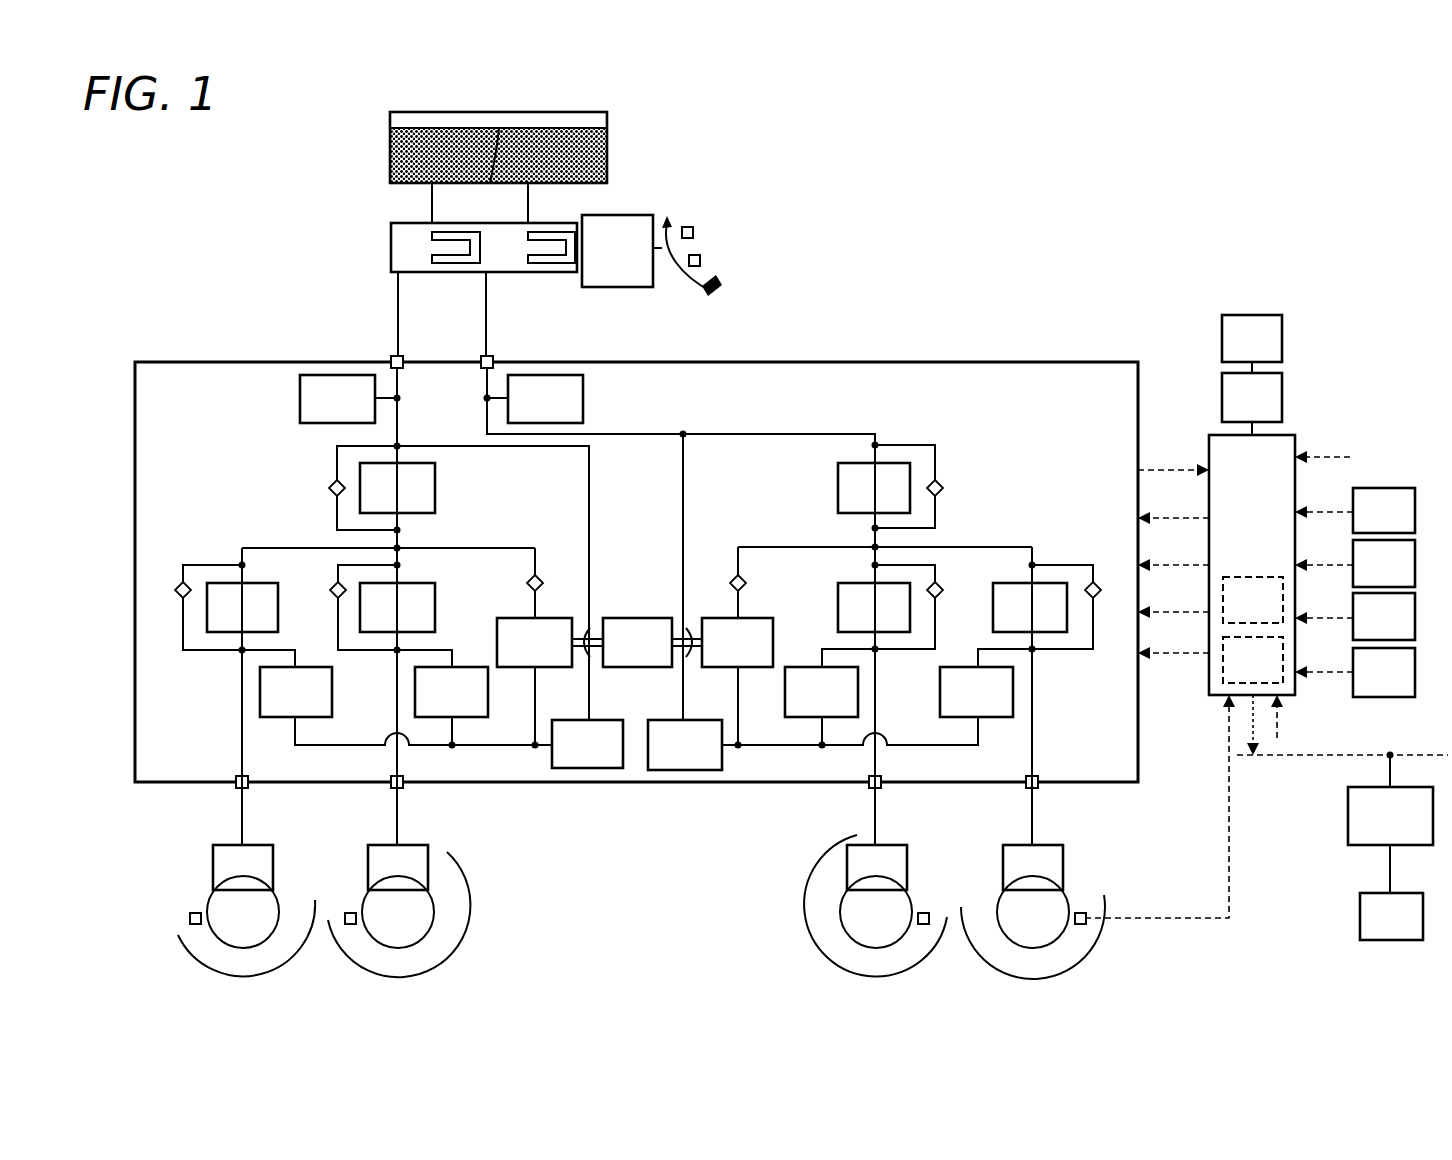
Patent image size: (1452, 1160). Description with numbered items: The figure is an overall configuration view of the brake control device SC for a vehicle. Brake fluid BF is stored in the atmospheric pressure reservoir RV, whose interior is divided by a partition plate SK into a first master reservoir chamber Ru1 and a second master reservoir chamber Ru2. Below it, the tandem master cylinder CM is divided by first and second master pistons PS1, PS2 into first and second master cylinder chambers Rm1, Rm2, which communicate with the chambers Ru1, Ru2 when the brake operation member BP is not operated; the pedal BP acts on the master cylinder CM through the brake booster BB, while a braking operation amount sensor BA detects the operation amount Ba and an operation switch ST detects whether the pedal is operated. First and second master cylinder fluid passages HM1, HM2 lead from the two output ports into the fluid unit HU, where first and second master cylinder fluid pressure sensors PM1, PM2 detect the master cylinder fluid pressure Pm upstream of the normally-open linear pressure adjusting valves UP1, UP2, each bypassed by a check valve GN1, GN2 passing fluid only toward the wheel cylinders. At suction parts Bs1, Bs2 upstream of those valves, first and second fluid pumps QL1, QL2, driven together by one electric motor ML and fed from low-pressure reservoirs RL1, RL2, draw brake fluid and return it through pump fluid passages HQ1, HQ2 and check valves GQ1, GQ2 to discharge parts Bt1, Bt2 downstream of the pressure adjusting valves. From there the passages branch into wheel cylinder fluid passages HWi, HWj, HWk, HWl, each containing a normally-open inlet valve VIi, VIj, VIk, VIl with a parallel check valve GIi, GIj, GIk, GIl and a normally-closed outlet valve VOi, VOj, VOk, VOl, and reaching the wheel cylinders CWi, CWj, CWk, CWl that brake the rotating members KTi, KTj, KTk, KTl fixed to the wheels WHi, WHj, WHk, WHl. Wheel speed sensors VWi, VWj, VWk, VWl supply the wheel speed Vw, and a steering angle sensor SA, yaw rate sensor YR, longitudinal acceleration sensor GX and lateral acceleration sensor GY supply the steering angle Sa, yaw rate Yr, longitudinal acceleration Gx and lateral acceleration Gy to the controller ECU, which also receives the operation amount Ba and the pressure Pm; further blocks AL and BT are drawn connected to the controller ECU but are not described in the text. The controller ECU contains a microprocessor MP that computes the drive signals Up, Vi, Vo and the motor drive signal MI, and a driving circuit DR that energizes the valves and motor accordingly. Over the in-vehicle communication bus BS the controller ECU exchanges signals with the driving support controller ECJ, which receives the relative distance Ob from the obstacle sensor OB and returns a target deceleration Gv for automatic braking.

The reservoir RV is at (452, 113).
The partition plate SK is at (498, 138).
The first master reservoir chamber Ru1 is at (555, 155).
The second master reservoir chamber Ru2 is at (442, 155).
The brake fluid BF is at (602, 150).
The master cylinder CM is at (400, 223).
The first master cylinder chamber Rm1 is at (506, 266).
The second master cylinder chamber Rm2 is at (400, 263).
The first master piston PS1 is at (571, 264).
The second master piston PS2 is at (468, 264).
The brake booster BB is at (617, 251).
The braking operation amount sensor BA is at (691, 228).
The operation switch ST is at (699, 256).
The brake operation member BP is at (718, 292).
The brake control device SC is at (893, 330).
The fluid unit HU is at (264, 362).
The first master cylinder fluid pressure sensor PM1 is at (534, 399).
The second master cylinder fluid pressure sensor PM2 is at (350, 399).
The first master cylinder fluid passage HM1 is at (775, 434).
The second master cylinder fluid passage HM2 is at (395, 437).
The first suction part Bs1 is at (683, 434).
The second suction part Bs2 is at (403, 449).
The first pressure adjusting valve UP1 is at (874, 488).
The second pressure adjusting valve UP2 is at (397, 488).
The check valve GN1 is at (941, 486).
The check valve GN2 is at (331, 485).
The first discharge part Bt1 is at (871, 547).
The second discharge part Bt2 is at (401, 549).
The first pump fluid passage HQ1 is at (717, 601).
The second pump fluid passage HQ2 is at (536, 562).
The first check valve GQ1 is at (745, 582).
The second check valve GQ2 is at (527, 584).
The first fluid pump QL1 is at (737, 683).
The second fluid pump QL2 is at (534, 683).
The electric motor ML is at (637, 642).
The first low-pressure reservoir RL1 is at (685, 745).
The second low-pressure reservoir RL2 is at (587, 744).
The inlet valve VIj is at (242, 665).
The inlet valve VIk is at (397, 607).
The inlet valve VIl is at (874, 607).
The inlet valve VIi is at (1030, 664).
The check valve GIj is at (180, 595).
The check valve GIk is at (335, 595).
The check valve GIl is at (939, 595).
The check valve GIi is at (1097, 595).
The outlet valve VOj is at (397, 697).
The outlet valve VOk is at (442, 699).
The outlet valve VOl is at (850, 699).
The outlet valve VOi is at (986, 683).
The wheel cylinder fluid passage HWj is at (242, 805).
The wheel cylinder fluid passage HWk is at (397, 805).
The wheel cylinder fluid passage HWl is at (875, 805).
The wheel cylinder fluid passage HWi is at (1032, 805).
The wheel cylinder CWj is at (243, 867).
The wheel cylinder CWk is at (398, 867).
The wheel cylinder CWl is at (877, 867).
The wheel cylinder CWi is at (1033, 867).
The rotating member KTj is at (243, 912).
The rotating member KTk is at (398, 912).
The rotating member KTl is at (876, 912).
The rotating member KTi is at (1033, 912).
The wheel WHj is at (180, 940).
The wheel WHk is at (455, 942).
The wheel WHl is at (805, 940).
The wheel WHi is at (1102, 940).
The wheel speed sensor VWj is at (194, 911).
The wheel speed sensor VWk is at (349, 911).
The wheel speed sensor VWl is at (925, 911).
The wheel speed sensor VWi is at (1080, 911).
The controller ECU is at (1252, 565).
The microprocessor MP is at (1253, 600).
The driving circuit DR is at (1253, 660).
The alternator AL is at (1252, 344).
The battery BT is at (1252, 404).
The steering angle sensor SA is at (1384, 510).
The yaw rate sensor YR is at (1384, 563).
The longitudinal acceleration sensor GX is at (1384, 616).
The lateral acceleration sensor GY is at (1384, 672).
The master cylinder fluid pressure Pm is at (1173, 456).
The motor drive signal MI is at (1173, 505).
The drive signal Up is at (1173, 552).
The drive signal Vi is at (1173, 599).
The drive signal Vo is at (1173, 641).
The braking operation amount Ba is at (1357, 458).
The steering angle Sa is at (1324, 499).
The yaw rate Yr is at (1324, 552).
The longitudinal acceleration Gx is at (1324, 604).
The lateral acceleration Gy is at (1324, 658).
The wheel speed Vw is at (1180, 806).
The target deceleration Gv is at (1294, 718).
The communication bus BS is at (1343, 727).
The driving support controller ECJ is at (1390, 800).
The relative distance Ob is at (1412, 869).
The obstacle sensor OB is at (1391, 916).